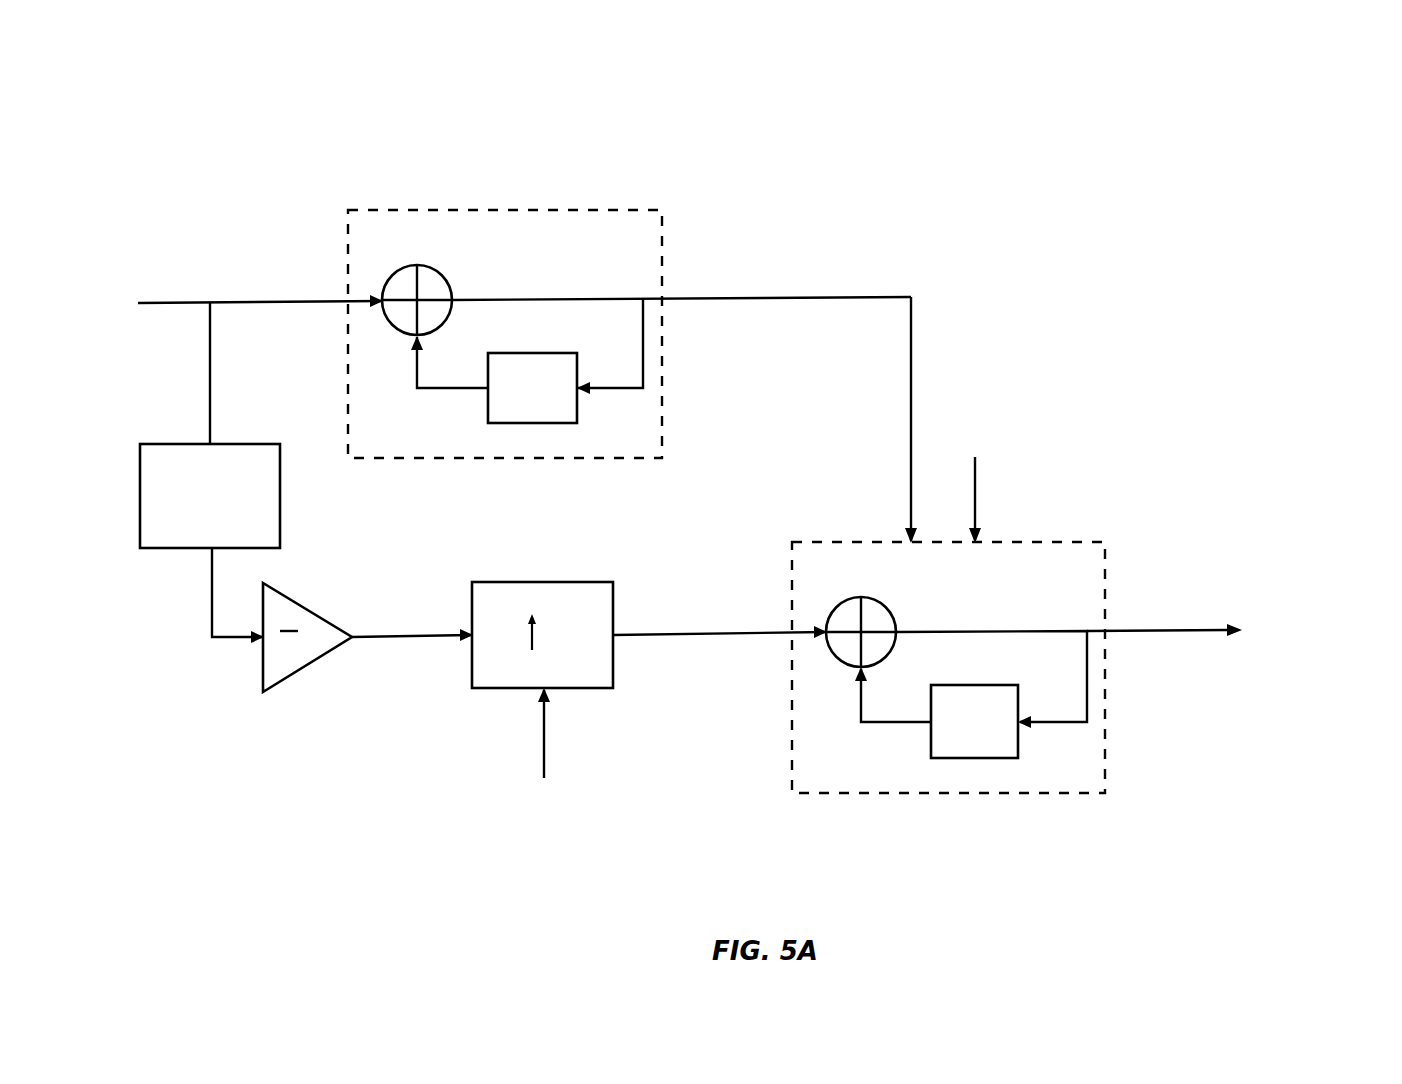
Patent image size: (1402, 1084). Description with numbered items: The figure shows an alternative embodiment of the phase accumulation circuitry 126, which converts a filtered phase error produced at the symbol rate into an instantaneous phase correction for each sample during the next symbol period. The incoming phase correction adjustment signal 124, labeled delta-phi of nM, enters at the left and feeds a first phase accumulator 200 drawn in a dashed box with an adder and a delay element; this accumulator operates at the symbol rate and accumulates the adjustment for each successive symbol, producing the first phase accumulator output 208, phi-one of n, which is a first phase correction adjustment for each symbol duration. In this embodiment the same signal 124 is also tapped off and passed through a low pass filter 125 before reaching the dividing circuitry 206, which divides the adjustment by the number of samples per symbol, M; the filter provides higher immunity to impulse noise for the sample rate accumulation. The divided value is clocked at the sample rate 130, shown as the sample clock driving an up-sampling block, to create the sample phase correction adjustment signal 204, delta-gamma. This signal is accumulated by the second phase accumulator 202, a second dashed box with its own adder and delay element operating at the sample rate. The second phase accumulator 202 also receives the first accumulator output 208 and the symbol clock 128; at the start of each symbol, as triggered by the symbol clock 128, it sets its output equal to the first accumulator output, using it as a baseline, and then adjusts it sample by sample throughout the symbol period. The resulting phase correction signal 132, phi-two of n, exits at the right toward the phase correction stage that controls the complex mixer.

The phase accumulation circuitry 126 is at (726, 145).
The phase correction adjustment signal 124 is at (176, 306).
The first phase accumulator 200 is at (605, 210).
The first phase accumulator output 208 is at (858, 298).
The low pass filter 125 is at (193, 552).
The dividing circuitry 206 is at (318, 612).
The sample rate 130 is at (544, 752).
The sample phase correction adjustment signal 204 is at (682, 635).
The second phase accumulator 202 is at (1050, 542).
The symbol clock 128 is at (975, 490).
The phase correction signal 132 is at (1130, 632).